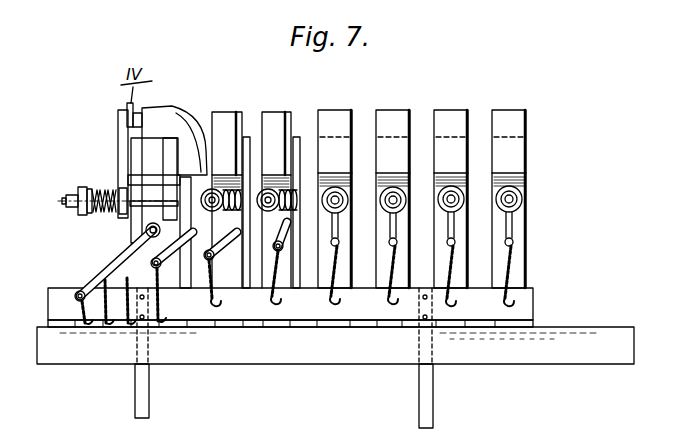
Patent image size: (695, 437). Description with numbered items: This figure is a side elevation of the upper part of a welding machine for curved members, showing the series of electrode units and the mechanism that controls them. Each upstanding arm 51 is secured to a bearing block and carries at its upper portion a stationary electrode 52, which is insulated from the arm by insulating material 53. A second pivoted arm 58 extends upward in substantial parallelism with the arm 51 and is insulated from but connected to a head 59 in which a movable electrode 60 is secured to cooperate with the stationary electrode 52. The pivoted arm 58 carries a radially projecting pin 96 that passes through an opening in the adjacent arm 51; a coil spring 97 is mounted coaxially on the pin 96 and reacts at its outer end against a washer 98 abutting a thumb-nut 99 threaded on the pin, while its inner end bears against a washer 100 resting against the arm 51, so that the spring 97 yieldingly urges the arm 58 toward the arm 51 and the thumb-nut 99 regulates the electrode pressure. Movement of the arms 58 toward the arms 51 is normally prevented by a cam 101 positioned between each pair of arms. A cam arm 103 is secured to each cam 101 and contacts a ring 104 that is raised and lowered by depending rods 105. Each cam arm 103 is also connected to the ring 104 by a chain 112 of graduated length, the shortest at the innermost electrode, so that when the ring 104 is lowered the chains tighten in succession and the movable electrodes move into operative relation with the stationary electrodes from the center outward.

The upstanding arm 51 is at (140, 224).
The stationary electrode 52 is at (118, 121).
The insulating material 53 is at (131, 132).
The pivoted arm 58 is at (169, 274).
The head 59 is at (186, 109).
The electrode 60 is at (140, 113).
The pin 96 is at (66, 200).
The coil spring 97 is at (105, 188).
The washer 98 is at (90, 188).
The thumb-nut 99 is at (577, 357).
The washer 100 is at (123, 216).
The cam 101 is at (162, 228).
The cam arm 103 is at (140, 253).
The ring 104 is at (527, 304).
The depending rod 105 is at (150, 407).
The chain 112 is at (82, 318).